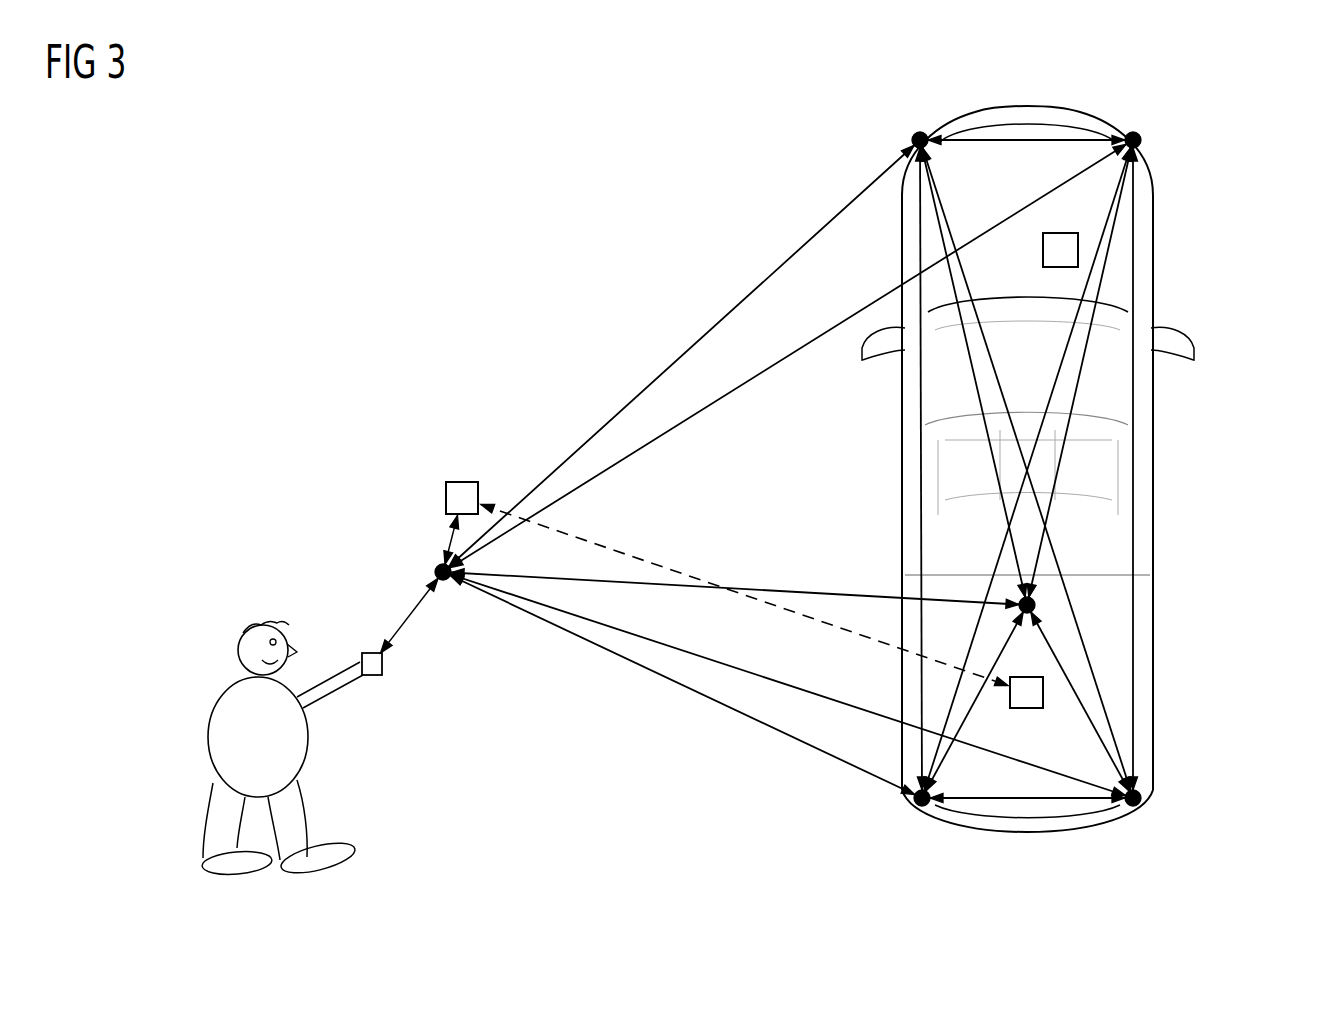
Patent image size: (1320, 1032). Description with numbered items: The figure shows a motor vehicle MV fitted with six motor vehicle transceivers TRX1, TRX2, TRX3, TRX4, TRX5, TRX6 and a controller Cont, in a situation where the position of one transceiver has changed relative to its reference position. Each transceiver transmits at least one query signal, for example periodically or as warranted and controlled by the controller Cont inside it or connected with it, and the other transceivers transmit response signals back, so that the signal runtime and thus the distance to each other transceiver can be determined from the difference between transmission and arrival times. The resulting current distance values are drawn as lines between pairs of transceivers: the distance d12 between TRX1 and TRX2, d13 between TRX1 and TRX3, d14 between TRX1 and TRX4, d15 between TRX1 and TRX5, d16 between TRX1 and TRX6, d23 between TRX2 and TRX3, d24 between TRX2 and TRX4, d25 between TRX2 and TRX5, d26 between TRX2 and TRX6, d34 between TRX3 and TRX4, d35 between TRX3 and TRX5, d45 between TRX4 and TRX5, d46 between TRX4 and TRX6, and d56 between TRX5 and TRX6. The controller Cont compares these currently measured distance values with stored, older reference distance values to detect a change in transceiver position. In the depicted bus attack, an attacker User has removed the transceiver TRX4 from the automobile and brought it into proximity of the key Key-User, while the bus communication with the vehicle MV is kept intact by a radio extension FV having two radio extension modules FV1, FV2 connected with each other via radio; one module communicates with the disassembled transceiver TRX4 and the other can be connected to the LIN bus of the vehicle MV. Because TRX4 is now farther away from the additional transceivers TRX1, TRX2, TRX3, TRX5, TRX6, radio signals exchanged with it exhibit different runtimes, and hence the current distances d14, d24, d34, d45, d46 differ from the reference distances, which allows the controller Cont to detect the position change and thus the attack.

The motor vehicle transceiver TRX1 is at (914, 134).
The motor vehicle transceiver TRX2 is at (1140, 135).
The motor vehicle transceiver TRX3 is at (1036, 601).
The motor vehicle transceiver TRX4 is at (435, 568).
The motor vehicle transceiver TRX5 is at (916, 806).
The motor vehicle transceiver TRX6 is at (1139, 806).
The radio extension module FV1 is at (462, 480).
The radio extension module FV2 is at (1044, 692).
The radio extension FV is at (744, 595).
The controller Cont is at (1079, 250).
The motor vehicle MV is at (1156, 300).
The attacker User is at (238, 650).
The key Key-User is at (372, 677).
The current distance value d12 is at (1027, 138).
The current distance value d13 is at (995, 480).
The current distance value d14 is at (773, 268).
The current distance value d15 is at (925, 420).
The current distance value d16 is at (1078, 609).
The current distance value d23 is at (1052, 516).
The current distance value d24 is at (773, 362).
The current distance value d25 is at (1003, 548).
The current distance value d26 is at (1136, 446).
The current distance value d34 is at (768, 589).
The current distance value d35 is at (980, 690).
The current distance value d45 is at (718, 703).
The current distance value d46 is at (565, 612).
The current distance value d56 is at (1027, 803).